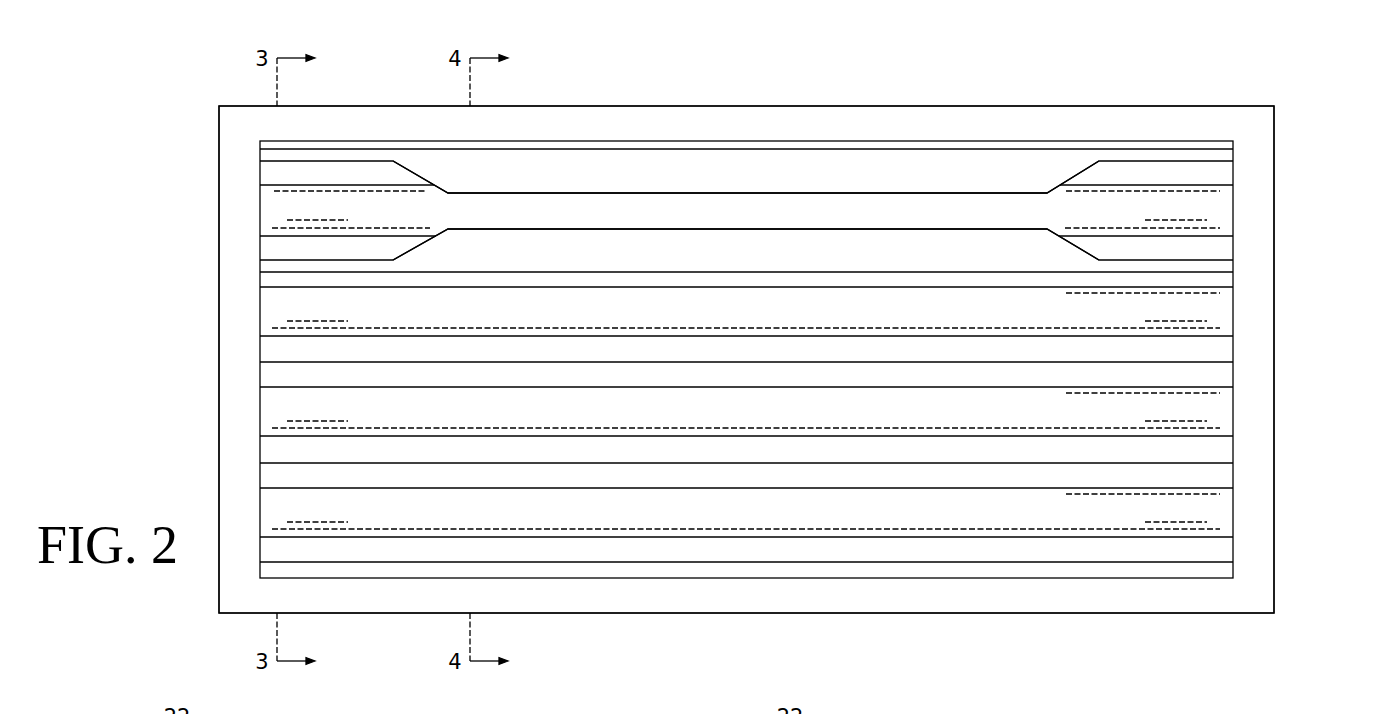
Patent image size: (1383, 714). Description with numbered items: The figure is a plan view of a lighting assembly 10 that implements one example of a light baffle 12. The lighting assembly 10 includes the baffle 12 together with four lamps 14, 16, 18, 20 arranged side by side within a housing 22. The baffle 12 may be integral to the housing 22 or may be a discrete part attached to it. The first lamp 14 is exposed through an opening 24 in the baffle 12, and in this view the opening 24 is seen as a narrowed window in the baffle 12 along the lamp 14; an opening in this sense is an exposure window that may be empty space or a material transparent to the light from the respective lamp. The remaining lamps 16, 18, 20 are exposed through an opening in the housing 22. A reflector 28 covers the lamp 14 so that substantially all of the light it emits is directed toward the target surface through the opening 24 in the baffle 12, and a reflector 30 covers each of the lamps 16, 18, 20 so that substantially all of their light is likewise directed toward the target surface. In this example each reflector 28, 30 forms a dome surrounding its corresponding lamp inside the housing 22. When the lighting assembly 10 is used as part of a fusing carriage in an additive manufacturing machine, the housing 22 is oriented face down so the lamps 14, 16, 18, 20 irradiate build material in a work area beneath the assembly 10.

The lighting assembly 10 is at (724, 75).
The baffle 12 is at (614, 172).
The lamp 14 is at (1215, 217).
The lamp 16 is at (1215, 317).
The lamp 18 is at (1215, 417).
The lamp 20 is at (1215, 517).
The housing 22 is at (827, 123).
The opening 24 is at (398, 175).
The reflector 28 is at (1213, 174).
The reflector 30 is at (1213, 281).